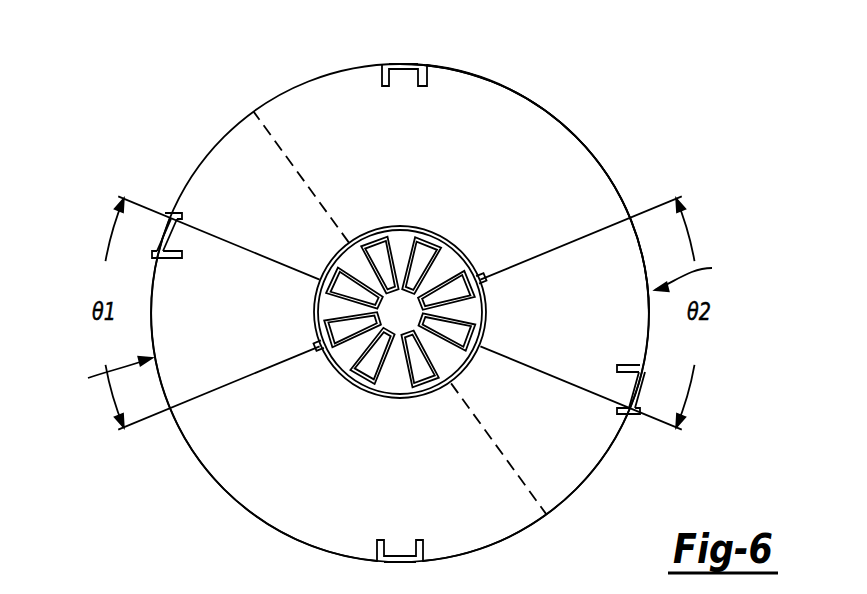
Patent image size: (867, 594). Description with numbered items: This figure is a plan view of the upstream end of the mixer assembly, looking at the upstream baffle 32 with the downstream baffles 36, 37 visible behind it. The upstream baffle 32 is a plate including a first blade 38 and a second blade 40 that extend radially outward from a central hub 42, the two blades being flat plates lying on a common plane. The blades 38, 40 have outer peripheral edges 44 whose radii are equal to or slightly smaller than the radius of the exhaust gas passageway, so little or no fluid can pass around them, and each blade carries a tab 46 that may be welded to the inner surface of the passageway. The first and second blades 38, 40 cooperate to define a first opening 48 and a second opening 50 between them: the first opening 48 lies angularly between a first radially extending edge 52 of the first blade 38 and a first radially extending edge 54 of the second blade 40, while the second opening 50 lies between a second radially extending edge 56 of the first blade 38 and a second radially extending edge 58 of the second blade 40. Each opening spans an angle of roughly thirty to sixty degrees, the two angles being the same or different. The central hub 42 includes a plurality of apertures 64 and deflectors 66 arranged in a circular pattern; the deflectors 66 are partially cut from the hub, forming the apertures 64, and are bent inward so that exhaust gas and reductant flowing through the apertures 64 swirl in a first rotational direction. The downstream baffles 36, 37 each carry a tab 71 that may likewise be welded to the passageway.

The upstream baffle 32 is at (534, 102).
The downstream baffle 36 is at (168, 327).
The downstream baffle 37 is at (642, 318).
The first blade 38 is at (588, 173).
The second blade 40 is at (302, 521).
The central hub 42 is at (398, 370).
The outer peripheral edges 44 is at (513, 87).
The tab 46 is at (402, 64).
The first opening 48 is at (103, 390).
The second opening 50 is at (699, 259).
The first radially extending edge of the first blade 52 is at (200, 231).
The first radially extending edge of the second blade 54 is at (223, 385).
The second radially extending edge of the first blade 56 is at (583, 240).
The second radially extending edge of the second blade 58 is at (593, 391).
The apertures 64 is at (458, 272).
The deflectors 66 is at (390, 252).
The tab 71 is at (162, 234).